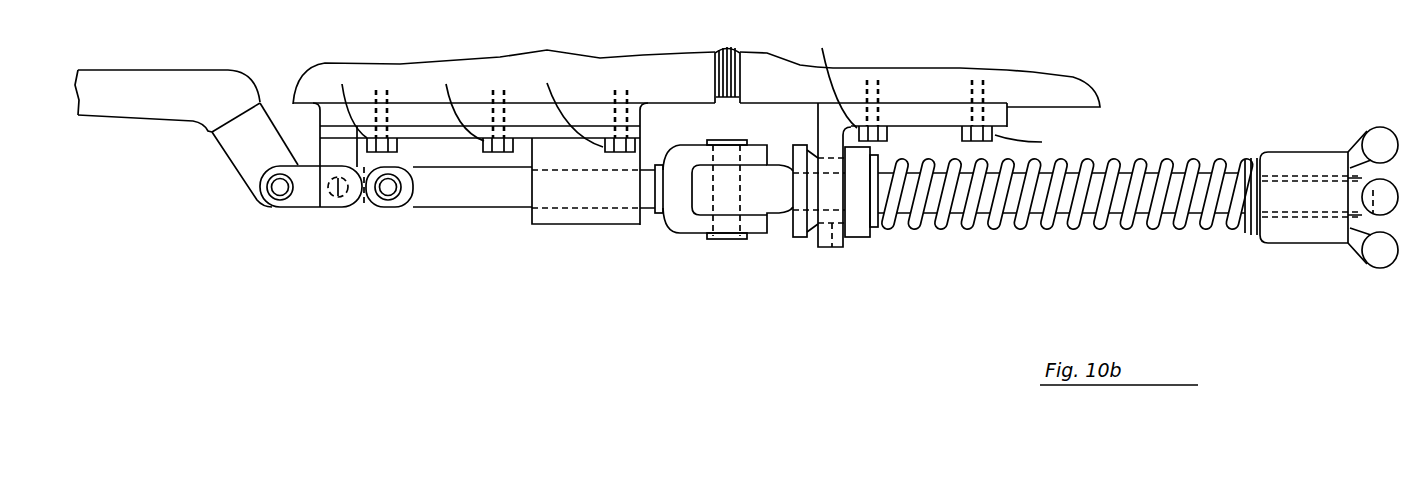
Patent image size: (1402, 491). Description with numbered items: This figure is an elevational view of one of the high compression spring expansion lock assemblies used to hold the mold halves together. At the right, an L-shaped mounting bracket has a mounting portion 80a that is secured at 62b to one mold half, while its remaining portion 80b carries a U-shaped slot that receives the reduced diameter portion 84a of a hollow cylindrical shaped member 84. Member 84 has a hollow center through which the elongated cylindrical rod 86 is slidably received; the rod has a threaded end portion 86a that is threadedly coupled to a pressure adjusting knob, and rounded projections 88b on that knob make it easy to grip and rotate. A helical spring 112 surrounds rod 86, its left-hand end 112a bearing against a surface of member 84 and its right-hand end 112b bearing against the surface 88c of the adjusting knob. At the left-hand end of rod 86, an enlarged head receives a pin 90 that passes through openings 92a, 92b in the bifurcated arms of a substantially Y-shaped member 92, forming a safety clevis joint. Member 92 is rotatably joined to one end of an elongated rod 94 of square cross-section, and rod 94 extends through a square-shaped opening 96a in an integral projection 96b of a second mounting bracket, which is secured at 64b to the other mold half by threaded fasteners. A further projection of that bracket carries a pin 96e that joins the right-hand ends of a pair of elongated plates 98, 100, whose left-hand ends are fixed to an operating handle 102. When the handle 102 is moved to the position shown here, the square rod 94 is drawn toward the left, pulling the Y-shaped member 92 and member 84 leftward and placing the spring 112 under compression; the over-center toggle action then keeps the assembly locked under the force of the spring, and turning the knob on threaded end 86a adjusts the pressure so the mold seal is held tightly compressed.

The operating handle 102 is at (163, 90).
The elongated plate 98 is at (255, 108).
The elongated plate 100 is at (267, 110).
The square-shaped opening 96a is at (318, 188).
The pin 96e is at (338, 200).
The elongated rod 94 is at (460, 195).
The integral projection 96b is at (580, 225).
The securing location on mold half 64 64b is at (413, 70).
The pin 90 is at (747, 145).
The remaining portion of mounting bracket 80b is at (827, 127).
The mounting portion 80a is at (933, 113).
The securing location on mold half 62 62b is at (1028, 87).
The Y-shaped member 92 is at (683, 220).
The opening 92a is at (712, 158).
The opening 92b is at (707, 227).
The hollow cylindrical shaped member 84 is at (859, 262).
The reduced diameter portion 84a is at (830, 245).
The left-hand end of spring 112a is at (872, 230).
The helical spring 112 is at (1017, 227).
The elongated cylindrical rod 86 is at (1138, 197).
The right-hand end of spring 112b is at (1255, 225).
The threaded end portion 86a is at (1303, 175).
The surface of pressure adjusting knob 88c is at (1250, 160).
The rounded projections 88b is at (1373, 260).